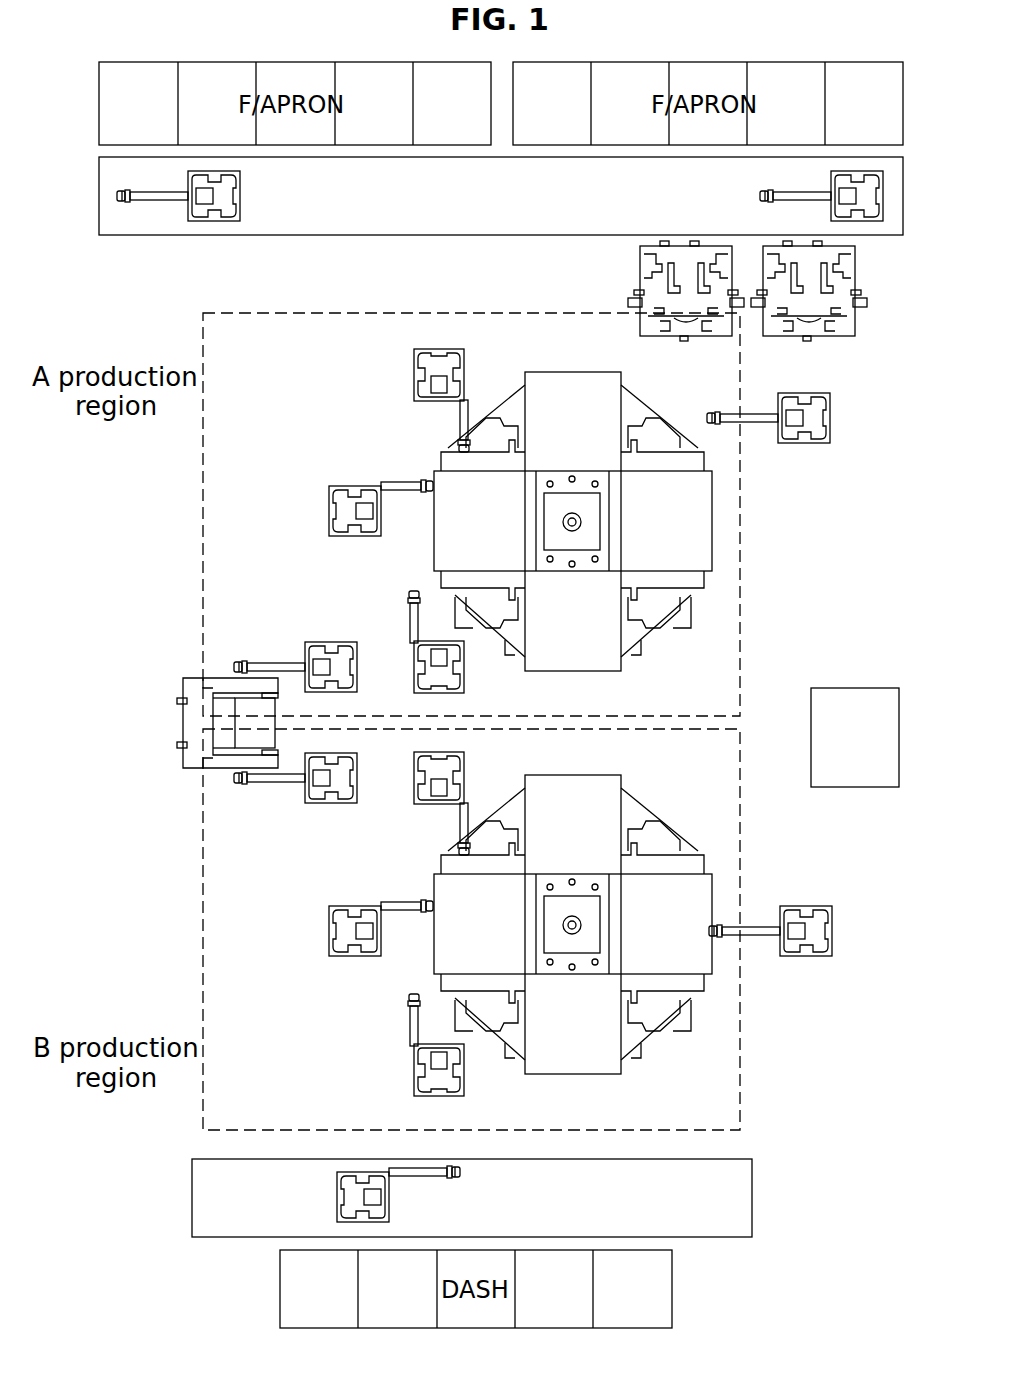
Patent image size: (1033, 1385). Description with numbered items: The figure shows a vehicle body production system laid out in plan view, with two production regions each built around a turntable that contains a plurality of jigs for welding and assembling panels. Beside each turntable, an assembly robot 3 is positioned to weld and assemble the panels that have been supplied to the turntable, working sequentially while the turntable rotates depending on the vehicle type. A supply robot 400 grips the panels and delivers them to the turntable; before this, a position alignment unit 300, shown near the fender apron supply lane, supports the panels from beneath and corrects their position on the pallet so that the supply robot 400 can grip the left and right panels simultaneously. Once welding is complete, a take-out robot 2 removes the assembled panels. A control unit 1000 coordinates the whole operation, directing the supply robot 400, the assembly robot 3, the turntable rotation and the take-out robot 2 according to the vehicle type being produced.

The take-out robot 2 is at (312, 780).
The assembly robot 3 is at (420, 1050).
The position alignment unit 300 is at (642, 274).
The supply robot 400 is at (822, 418).
The control unit 1000 is at (862, 688).